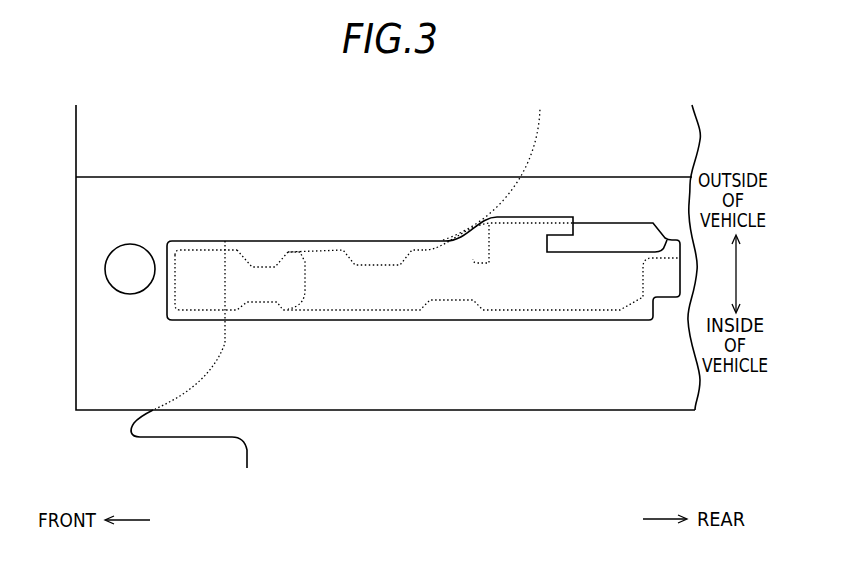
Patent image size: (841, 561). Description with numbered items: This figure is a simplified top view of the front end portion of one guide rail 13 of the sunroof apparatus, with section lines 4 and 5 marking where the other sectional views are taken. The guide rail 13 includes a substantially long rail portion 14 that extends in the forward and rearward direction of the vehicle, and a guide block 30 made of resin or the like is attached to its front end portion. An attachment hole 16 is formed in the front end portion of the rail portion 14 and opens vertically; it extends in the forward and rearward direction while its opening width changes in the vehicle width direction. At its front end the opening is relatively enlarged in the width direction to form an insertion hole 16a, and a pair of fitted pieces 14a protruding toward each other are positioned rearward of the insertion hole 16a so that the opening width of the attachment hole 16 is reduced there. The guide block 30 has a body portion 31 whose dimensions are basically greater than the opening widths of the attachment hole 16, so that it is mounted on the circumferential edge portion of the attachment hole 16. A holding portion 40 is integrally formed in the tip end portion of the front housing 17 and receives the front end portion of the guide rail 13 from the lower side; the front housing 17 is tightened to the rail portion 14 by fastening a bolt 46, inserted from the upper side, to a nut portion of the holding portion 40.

The guide rail 13 is at (661, 412).
The rail portion 14 is at (541, 410).
The fitted pieces 14a is at (299, 252).
The attachment hole 16 is at (577, 320).
The insertion hole 16a is at (201, 247).
The front housing 17 is at (250, 450).
The guide block 30 is at (442, 322).
The body portion 31 is at (355, 321).
The holding portion 40 is at (226, 352).
The bolt 46 is at (130, 244).
The section line IV-IV 4 is at (178, 269).
The section line V-V 5 is at (260, 158).